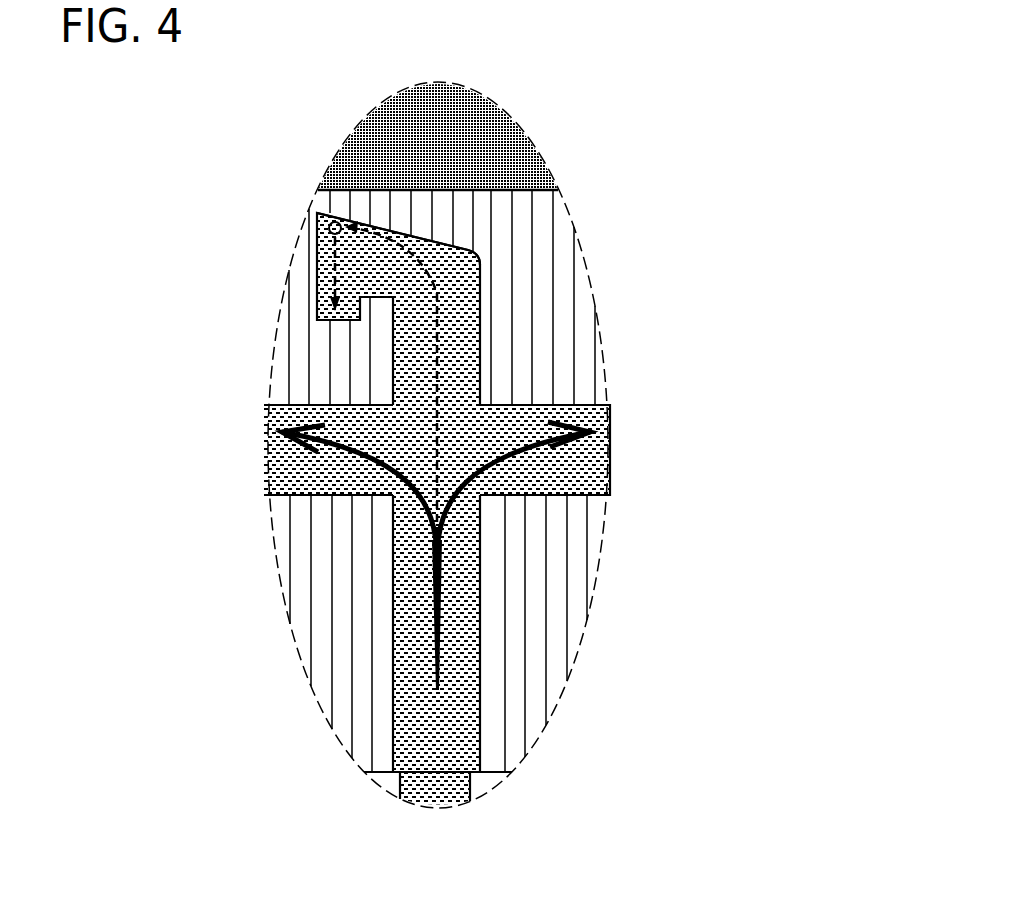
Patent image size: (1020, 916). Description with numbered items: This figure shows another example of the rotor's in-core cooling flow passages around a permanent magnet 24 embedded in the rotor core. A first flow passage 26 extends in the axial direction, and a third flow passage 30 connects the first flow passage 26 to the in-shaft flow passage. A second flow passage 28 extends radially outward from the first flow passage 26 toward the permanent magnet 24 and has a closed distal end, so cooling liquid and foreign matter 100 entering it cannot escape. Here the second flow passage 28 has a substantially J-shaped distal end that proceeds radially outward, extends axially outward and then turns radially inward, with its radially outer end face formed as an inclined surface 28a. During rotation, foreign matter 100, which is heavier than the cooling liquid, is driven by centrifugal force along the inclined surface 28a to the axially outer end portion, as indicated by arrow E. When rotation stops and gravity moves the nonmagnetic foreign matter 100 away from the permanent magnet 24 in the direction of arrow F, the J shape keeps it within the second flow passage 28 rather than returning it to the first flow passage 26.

The permanent magnet 24 is at (467, 112).
The first flow passage 26 is at (605, 468).
The second flow passage 28 is at (400, 360).
The inclined surface 28a is at (468, 250).
The third flow passage 30 is at (400, 650).
The foreign matter 100 is at (328, 212).
The arrow F is at (328, 262).
The arrow E is at (480, 322).